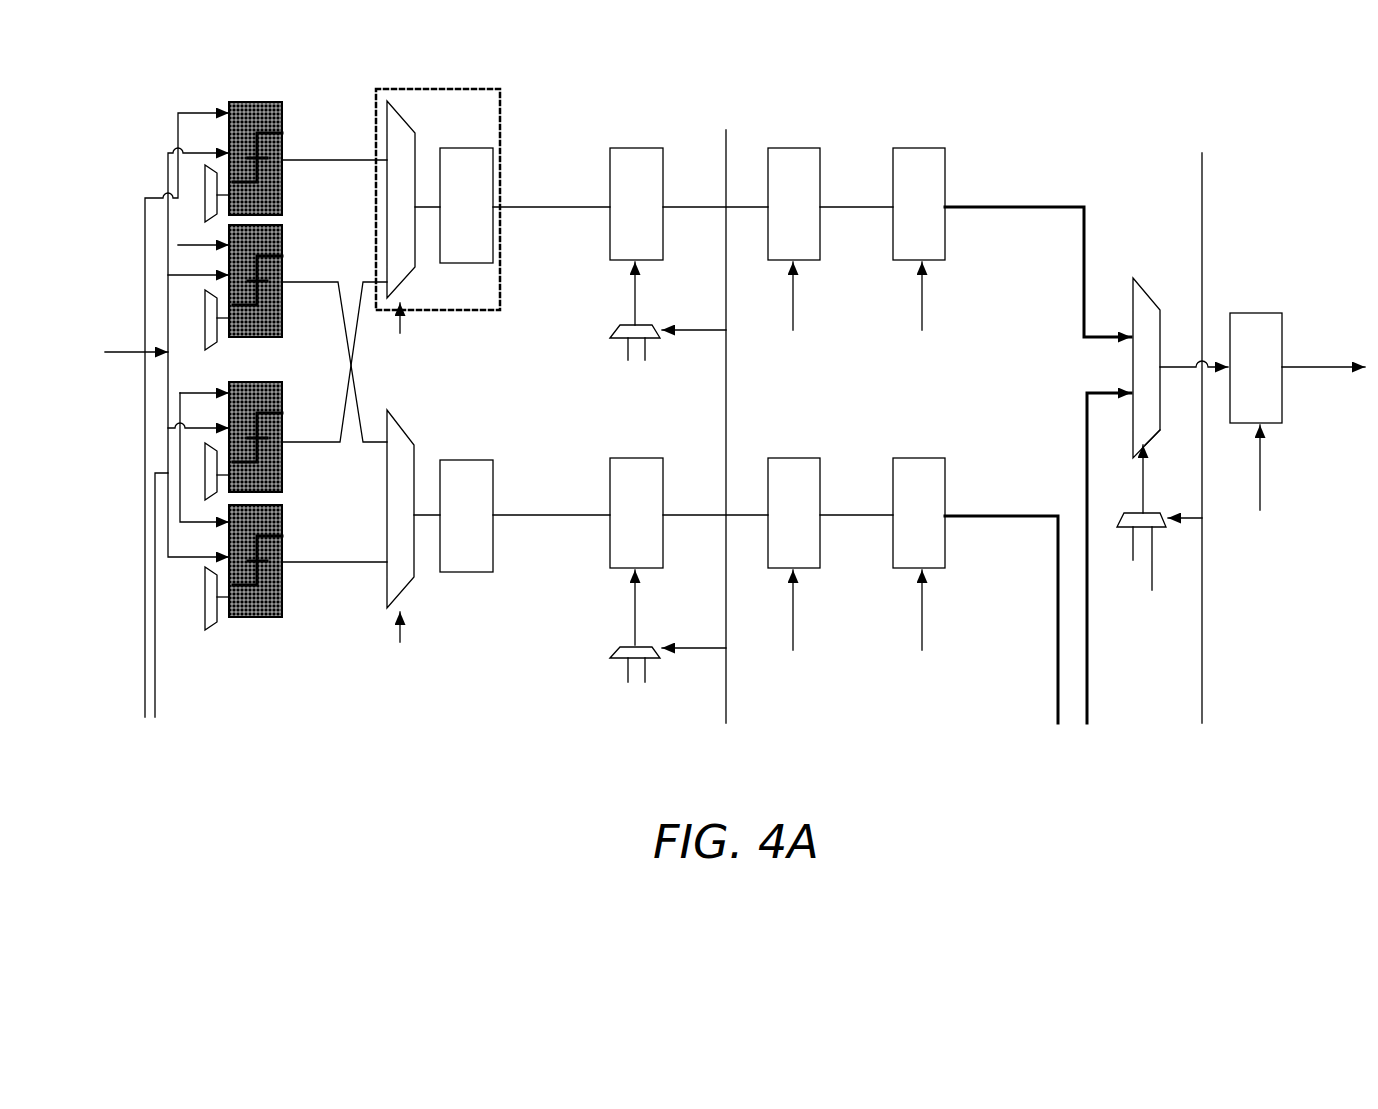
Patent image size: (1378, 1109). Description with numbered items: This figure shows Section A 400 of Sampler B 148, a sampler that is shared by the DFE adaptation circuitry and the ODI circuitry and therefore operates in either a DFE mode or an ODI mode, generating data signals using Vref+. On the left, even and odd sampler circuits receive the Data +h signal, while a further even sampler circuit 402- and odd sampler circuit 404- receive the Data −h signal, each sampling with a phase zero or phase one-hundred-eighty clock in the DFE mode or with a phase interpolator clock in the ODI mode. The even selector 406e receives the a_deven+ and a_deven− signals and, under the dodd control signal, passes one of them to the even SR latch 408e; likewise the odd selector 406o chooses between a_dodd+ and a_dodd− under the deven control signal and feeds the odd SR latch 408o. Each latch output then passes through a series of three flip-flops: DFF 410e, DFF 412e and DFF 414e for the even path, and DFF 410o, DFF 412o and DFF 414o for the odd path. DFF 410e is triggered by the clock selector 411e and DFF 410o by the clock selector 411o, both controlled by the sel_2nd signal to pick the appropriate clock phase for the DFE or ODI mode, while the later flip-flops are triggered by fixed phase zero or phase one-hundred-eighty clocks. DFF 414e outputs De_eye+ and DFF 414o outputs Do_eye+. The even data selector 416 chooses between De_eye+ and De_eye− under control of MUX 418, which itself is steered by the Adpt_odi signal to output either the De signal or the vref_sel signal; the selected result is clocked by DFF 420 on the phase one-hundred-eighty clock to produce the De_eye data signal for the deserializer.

The Section A 400 is at (1047, 792).
The Sampler B 148 is at (718, 480).
The even sampler circuit 402- is at (232, 428).
The odd sampler circuit 404- is at (228, 574).
The even selector 406e is at (410, 233).
The odd selector 406o is at (405, 540).
The even SR latch 408e is at (468, 220).
The odd SR latch 408o is at (468, 531).
The DFF 410e is at (639, 222).
The DFF 410o is at (638, 537).
The clock selector 411e is at (637, 356).
The clock selector 411o is at (637, 677).
The DFF 412e is at (797, 244).
The DFF 412o is at (796, 554).
The DFF 414e is at (922, 244).
The DFF 414o is at (921, 554).
The even data selector 416 is at (1143, 351).
The MUX 418 is at (1148, 528).
The DFF 420 is at (1256, 406).